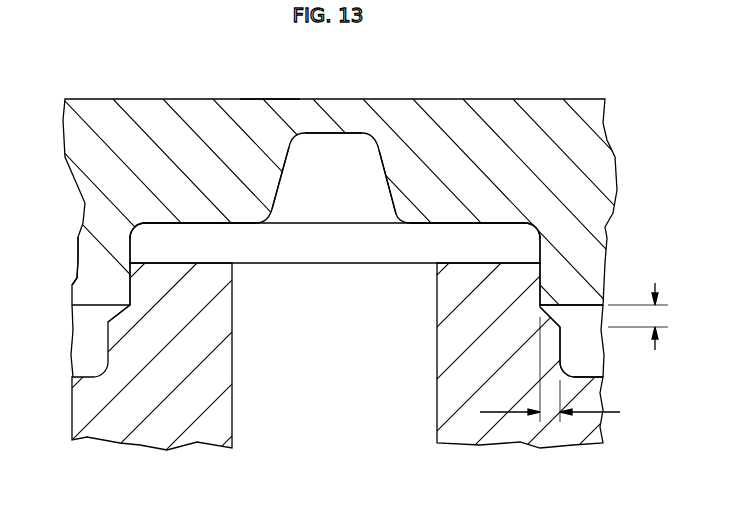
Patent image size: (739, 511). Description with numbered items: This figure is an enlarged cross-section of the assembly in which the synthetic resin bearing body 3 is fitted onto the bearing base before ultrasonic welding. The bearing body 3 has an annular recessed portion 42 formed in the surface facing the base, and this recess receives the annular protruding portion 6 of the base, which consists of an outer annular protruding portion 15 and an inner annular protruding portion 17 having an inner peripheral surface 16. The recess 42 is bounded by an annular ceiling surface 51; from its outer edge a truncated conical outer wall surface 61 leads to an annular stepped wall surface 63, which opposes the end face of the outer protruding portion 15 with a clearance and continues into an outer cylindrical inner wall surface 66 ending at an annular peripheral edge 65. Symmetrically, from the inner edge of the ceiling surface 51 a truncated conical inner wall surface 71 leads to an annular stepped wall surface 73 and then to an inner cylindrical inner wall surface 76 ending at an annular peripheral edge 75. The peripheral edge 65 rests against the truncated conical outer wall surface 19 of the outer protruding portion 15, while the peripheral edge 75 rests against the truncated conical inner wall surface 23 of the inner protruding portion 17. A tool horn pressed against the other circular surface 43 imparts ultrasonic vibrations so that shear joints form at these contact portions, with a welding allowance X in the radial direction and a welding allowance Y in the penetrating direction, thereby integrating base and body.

The bearing body 3 is at (110, 88).
The annular protruding portion 6 is at (369, 273).
The outer annular protruding portion 15 is at (176, 348).
The inner peripheral surface 16 is at (565, 349).
The inner annular protruding portion 17 is at (462, 287).
The truncated conical outer wall surface 19 is at (77, 283).
The truncated conical inner wall surface 23 is at (601, 307).
The annular recessed portion 42 is at (483, 250).
The other circular surface 43 is at (267, 99).
The annular ceiling surface 51 is at (344, 140).
The truncated conical outer wall surface 61 is at (285, 164).
The annular stepped wall surface 63 is at (200, 225).
The annular peripheral edge 65 is at (121, 315).
The outer cylindrical inner wall surface 66 is at (134, 262).
The truncated conical inner wall surface 71 is at (383, 163).
The annular stepped wall surface 73 is at (421, 224).
The annular peripheral edge 75 is at (538, 308).
The inner cylindrical inner wall surface 76 is at (528, 238).
The welding allowance in radial direction X is at (552, 416).
The welding allowance in penetrating direction Y is at (658, 318).